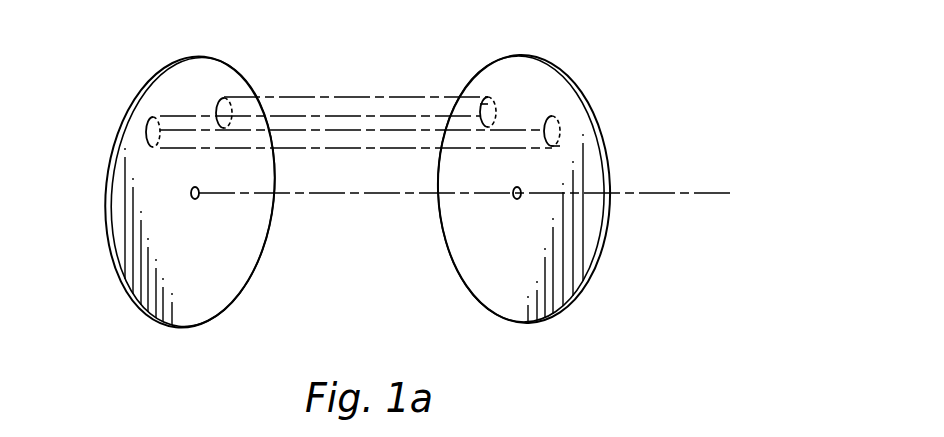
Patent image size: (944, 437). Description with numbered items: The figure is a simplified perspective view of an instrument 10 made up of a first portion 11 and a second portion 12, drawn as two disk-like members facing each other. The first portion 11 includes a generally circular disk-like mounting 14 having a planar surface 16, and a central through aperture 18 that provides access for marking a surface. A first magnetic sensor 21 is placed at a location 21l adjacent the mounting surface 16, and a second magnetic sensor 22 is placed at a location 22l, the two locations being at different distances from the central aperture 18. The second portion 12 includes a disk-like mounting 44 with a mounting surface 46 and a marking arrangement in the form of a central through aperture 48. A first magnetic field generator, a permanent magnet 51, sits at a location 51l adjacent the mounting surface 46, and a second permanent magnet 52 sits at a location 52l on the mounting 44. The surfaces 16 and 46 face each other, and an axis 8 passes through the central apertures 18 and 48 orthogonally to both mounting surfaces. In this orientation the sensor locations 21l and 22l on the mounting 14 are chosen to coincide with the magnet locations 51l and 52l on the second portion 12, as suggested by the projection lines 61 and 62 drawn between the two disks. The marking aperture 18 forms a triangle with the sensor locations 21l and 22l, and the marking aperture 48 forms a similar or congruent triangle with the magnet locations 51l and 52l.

The axis 8 is at (726, 194).
The instrument 10 is at (229, 366).
The first portion 11 is at (160, 192).
The second portion 12 is at (532, 189).
The disk-like mounting 14 is at (107, 172).
The planar surface 16 is at (228, 283).
The central through aperture 18 is at (195, 199).
The first magnetic sensor 21 is at (146, 130).
The location of first magnetic sensor 21l is at (155, 117).
The second magnetic sensor 22 is at (233, 97).
The location of second magnetic sensor 22l is at (218, 97).
The disk-like mounting 44 is at (606, 225).
The mounting surface 46 is at (486, 277).
The central through aperture 48 is at (517, 199).
The permanent magnet 51 is at (560, 125).
The location of first permanent magnet 51l is at (562, 137).
The second permanent magnet 52 is at (498, 97).
The location of second permanent magnet 52l is at (480, 103).
The projection line 61 is at (366, 148).
The projection line 62 is at (355, 95).